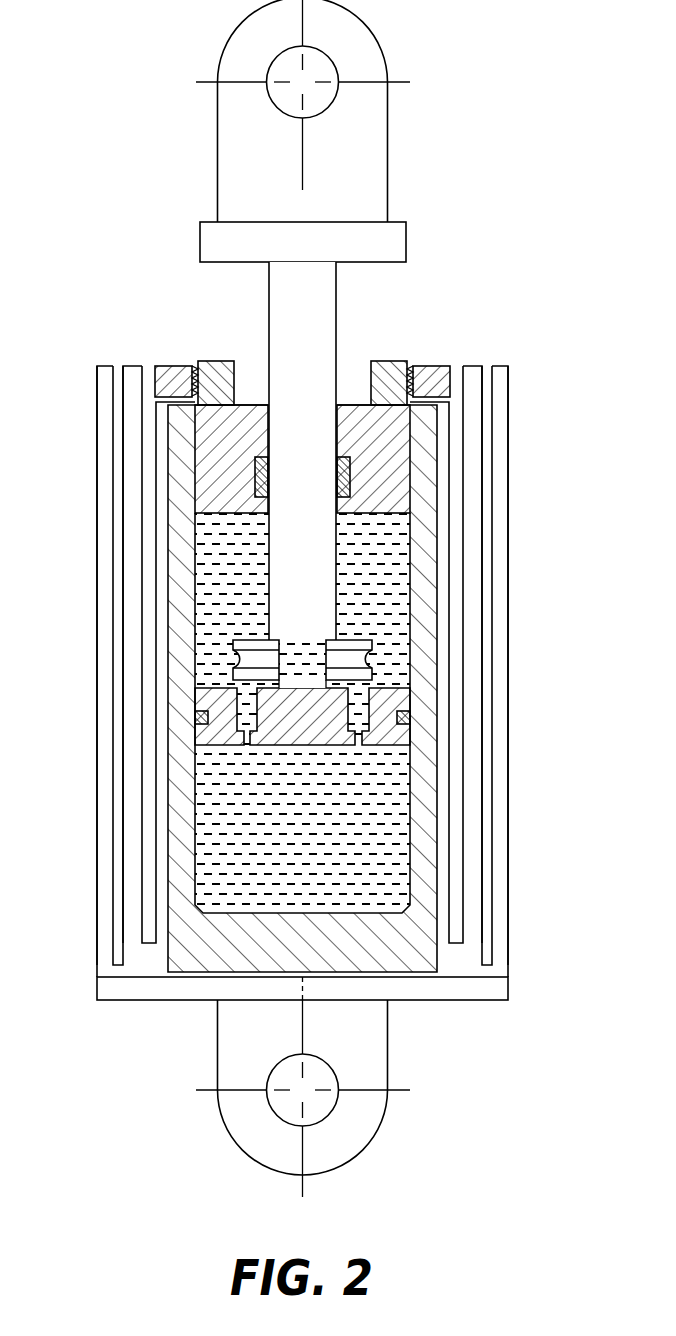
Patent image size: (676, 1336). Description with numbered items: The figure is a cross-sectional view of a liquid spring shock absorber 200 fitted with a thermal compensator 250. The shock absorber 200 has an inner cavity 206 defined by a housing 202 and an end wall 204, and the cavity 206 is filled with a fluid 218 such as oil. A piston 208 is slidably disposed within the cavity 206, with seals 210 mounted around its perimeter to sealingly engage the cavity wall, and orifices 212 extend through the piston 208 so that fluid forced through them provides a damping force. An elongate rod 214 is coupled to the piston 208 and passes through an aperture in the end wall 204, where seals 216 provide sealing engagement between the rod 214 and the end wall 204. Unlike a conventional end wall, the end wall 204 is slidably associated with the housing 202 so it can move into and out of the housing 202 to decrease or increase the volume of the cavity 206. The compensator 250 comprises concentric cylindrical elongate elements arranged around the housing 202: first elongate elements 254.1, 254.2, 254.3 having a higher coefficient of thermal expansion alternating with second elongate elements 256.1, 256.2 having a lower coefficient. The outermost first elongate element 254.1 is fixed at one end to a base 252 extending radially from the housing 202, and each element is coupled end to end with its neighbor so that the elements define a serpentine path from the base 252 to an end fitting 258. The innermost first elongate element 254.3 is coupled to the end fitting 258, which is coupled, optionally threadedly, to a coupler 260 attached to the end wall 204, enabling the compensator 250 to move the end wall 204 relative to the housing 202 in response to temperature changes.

The shock absorber 200 is at (500, 134).
The housing 202 is at (437, 788).
The end wall 204 is at (229, 417).
The inner cavity 206 is at (304, 713).
The piston 208 is at (384, 747).
The seals 210 is at (197, 717).
The orifices 212 is at (407, 693).
The rod 214 is at (337, 292).
The seals 216 is at (255, 477).
The fluid 218 is at (205, 591).
The thermal compensator 250 is at (337, 671).
The base 252 is at (440, 1002).
The first elongate element 254.1 is at (508, 832).
The first elongate element 254.2 is at (482, 876).
The first elongate element 254.3 is at (452, 935).
The second elongate element 256.1 is at (492, 853).
The second elongate element 256.2 is at (463, 903).
The end fitting 258 is at (173, 367).
The coupler 260 is at (390, 365).